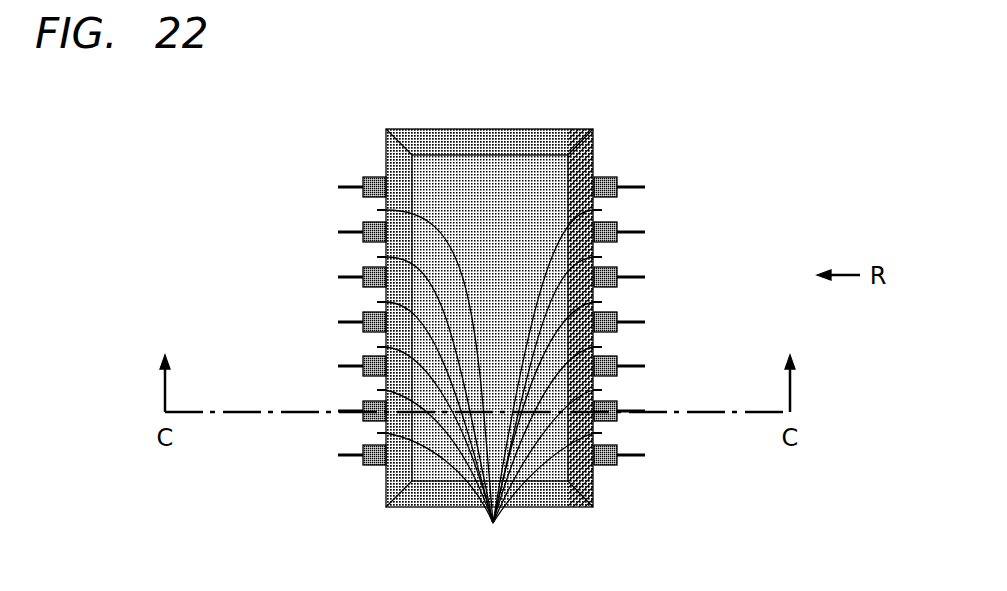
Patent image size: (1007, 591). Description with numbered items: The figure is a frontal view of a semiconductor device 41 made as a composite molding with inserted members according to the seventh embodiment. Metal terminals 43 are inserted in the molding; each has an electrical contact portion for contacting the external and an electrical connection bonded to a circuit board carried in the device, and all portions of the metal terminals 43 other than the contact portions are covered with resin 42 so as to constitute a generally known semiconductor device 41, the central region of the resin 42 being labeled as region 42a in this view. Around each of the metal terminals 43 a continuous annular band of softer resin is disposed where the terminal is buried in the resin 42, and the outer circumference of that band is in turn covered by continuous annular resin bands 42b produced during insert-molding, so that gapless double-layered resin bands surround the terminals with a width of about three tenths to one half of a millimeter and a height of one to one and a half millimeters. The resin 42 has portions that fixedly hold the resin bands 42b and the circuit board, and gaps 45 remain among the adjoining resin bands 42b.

The semiconductor device 41 is at (386, 140).
The resin 42 is at (438, 287).
The chip mounting region 42a is at (432, 178).
The resin bands 42b is at (362, 197).
The metal terminals 43 is at (340, 187).
The gaps 45 is at (493, 523).